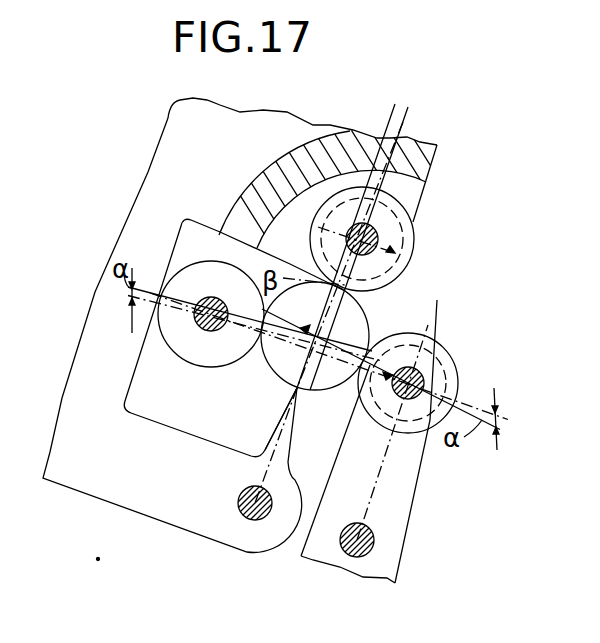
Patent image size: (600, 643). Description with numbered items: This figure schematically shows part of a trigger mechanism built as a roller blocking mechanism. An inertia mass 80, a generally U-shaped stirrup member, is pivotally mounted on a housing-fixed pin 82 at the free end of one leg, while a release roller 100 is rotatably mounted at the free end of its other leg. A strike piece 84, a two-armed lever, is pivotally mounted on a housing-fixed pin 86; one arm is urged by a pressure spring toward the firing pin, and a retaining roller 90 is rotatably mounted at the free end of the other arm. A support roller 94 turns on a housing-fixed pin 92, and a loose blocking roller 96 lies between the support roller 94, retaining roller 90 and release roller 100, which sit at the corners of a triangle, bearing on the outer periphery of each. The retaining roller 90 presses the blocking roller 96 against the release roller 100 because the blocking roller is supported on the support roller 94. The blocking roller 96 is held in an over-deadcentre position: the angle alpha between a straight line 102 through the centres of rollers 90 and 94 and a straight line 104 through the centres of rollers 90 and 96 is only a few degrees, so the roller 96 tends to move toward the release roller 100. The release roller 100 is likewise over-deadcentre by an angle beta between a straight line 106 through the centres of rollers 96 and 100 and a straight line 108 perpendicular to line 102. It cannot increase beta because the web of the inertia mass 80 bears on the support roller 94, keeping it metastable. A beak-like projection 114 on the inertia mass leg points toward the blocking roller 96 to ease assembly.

The inertia mass 80 is at (158, 168).
The housing-fixed pin 82 is at (248, 520).
The strike piece 84 is at (402, 525).
The housing-fixed pin 86 is at (345, 553).
The retaining roller 90 is at (444, 362).
The housing-fixed pin 92 is at (196, 345).
The support roller 94 is at (233, 327).
The blocking roller 96 is at (366, 318).
The release roller 100 is at (412, 218).
The straight line 102 is at (500, 402).
The straight line 104 is at (490, 447).
The straight line 106 is at (331, 303).
The straight line 108 is at (367, 200).
The beak-like projection 114 is at (281, 418).